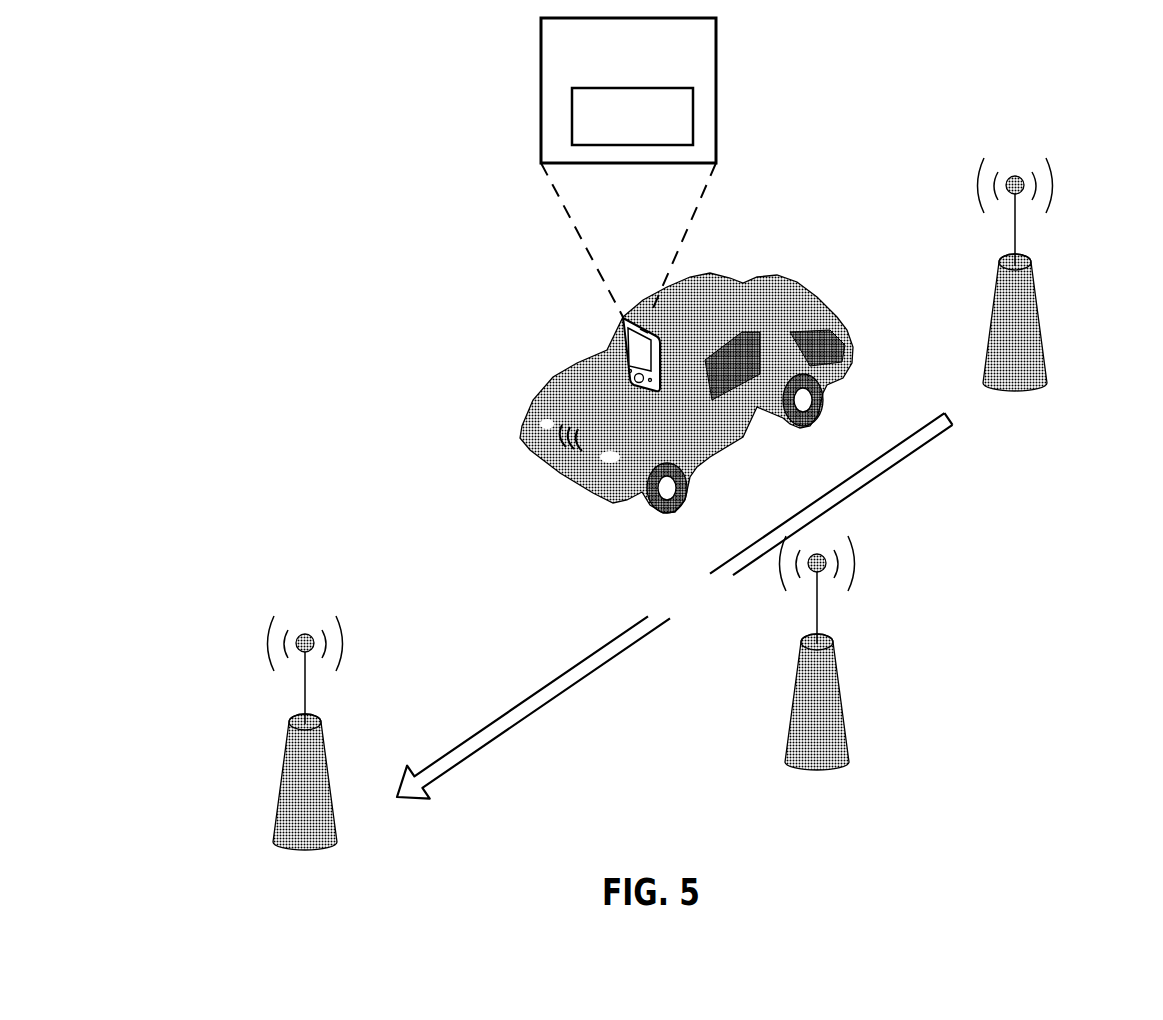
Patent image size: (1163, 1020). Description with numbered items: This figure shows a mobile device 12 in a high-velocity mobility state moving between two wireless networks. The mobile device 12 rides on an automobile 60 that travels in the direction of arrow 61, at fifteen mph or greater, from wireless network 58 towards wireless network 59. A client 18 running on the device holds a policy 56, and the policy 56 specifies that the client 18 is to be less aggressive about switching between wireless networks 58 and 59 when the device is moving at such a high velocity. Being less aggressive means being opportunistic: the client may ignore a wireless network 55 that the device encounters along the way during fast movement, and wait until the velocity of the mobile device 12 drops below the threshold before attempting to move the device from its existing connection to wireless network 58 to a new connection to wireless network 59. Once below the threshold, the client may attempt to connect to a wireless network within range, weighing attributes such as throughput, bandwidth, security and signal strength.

The mobile device 12 is at (620, 343).
The client 18 is at (548, 34).
The policy 56 is at (572, 116).
The automobile 60 is at (840, 308).
The arrow 61 is at (887, 472).
The wireless network 55 is at (843, 720).
The wireless network 58 is at (1042, 328).
The wireless network 59 is at (283, 762).